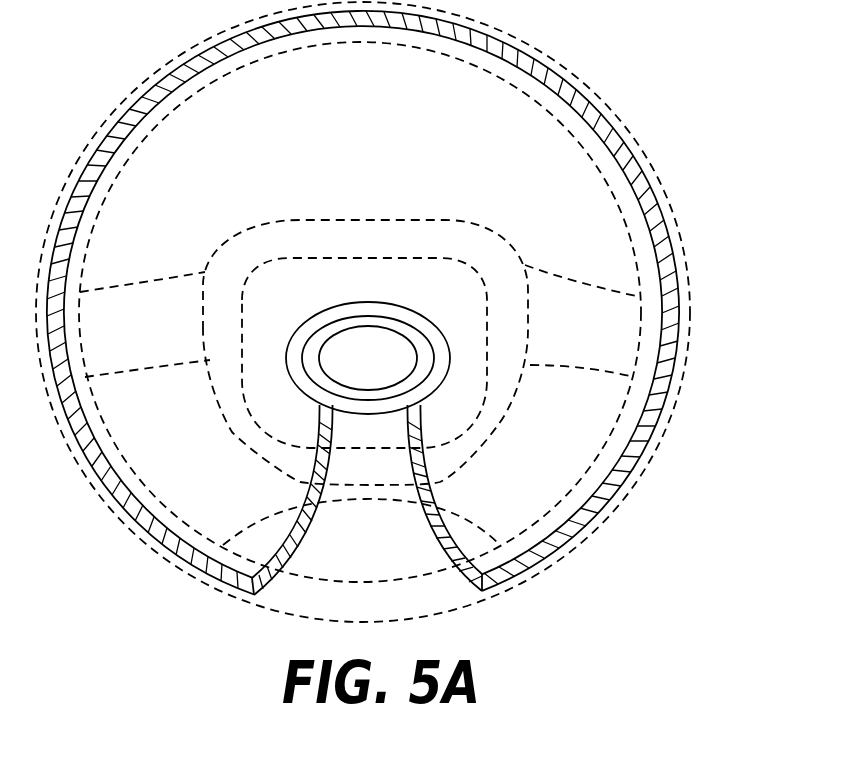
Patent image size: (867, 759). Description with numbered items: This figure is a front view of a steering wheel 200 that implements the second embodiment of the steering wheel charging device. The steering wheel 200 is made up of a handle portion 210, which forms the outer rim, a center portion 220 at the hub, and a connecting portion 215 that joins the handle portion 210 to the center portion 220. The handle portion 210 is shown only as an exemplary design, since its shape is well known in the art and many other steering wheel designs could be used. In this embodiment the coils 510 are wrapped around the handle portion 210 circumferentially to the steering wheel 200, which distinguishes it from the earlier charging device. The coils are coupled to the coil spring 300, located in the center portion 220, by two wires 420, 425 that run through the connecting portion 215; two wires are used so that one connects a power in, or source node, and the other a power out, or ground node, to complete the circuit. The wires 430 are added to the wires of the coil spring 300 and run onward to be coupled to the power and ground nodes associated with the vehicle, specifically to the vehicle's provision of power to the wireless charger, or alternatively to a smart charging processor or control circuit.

The steering wheel 200 is at (595, 530).
The handle portion 210 is at (628, 480).
The connecting portion 215 is at (614, 374).
The center portion 220 is at (344, 221).
The coil spring 300 is at (385, 373).
The wire 420 is at (431, 494).
The wire 425 is at (307, 491).
The wires 430 is at (444, 340).
The coils 510 is at (660, 204).